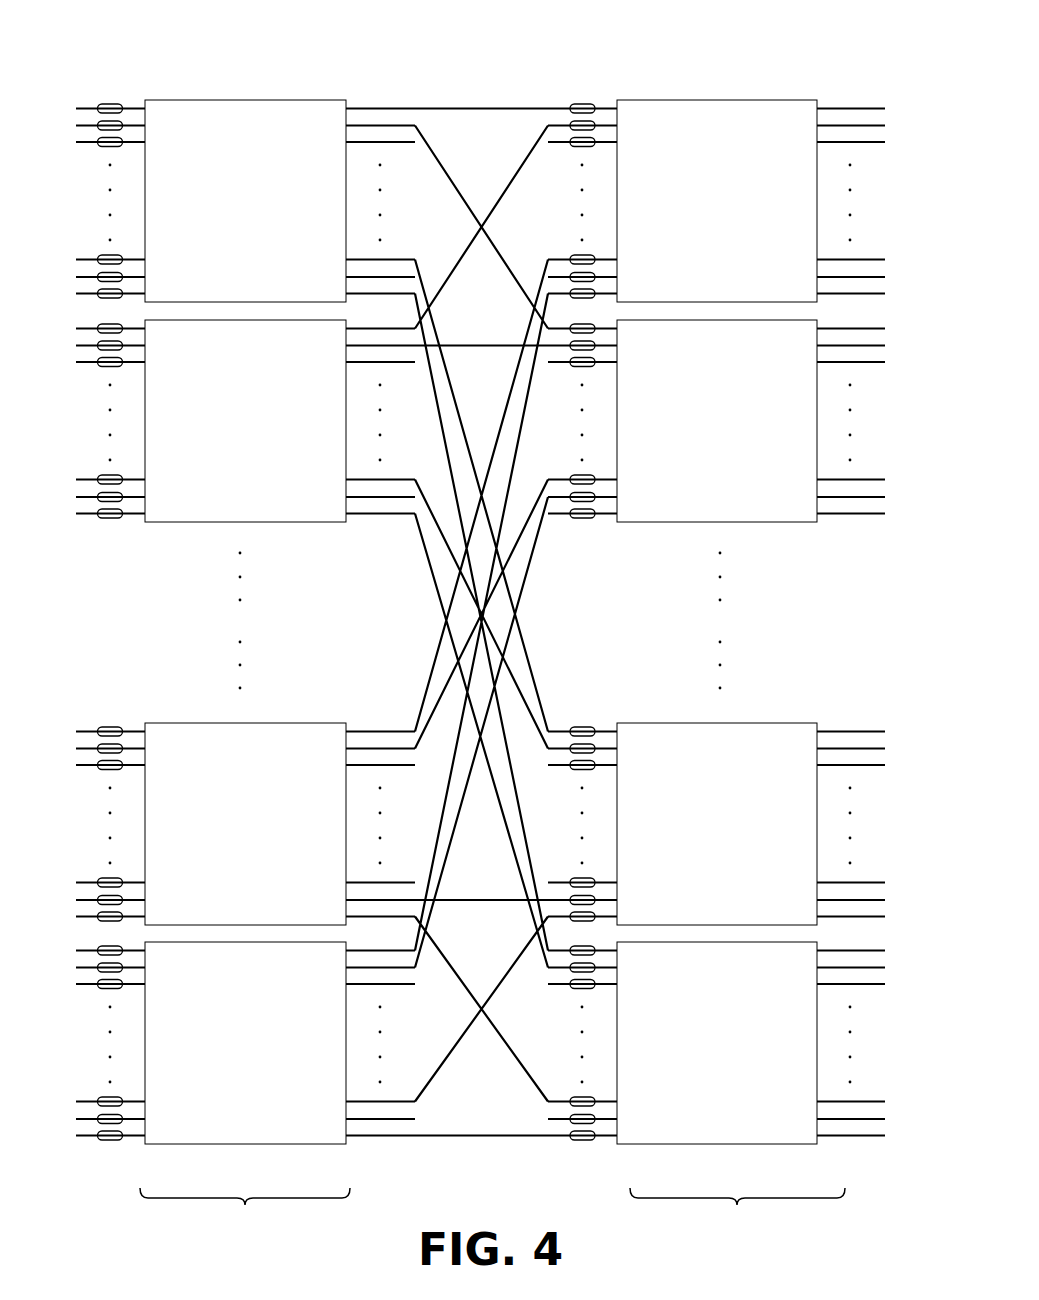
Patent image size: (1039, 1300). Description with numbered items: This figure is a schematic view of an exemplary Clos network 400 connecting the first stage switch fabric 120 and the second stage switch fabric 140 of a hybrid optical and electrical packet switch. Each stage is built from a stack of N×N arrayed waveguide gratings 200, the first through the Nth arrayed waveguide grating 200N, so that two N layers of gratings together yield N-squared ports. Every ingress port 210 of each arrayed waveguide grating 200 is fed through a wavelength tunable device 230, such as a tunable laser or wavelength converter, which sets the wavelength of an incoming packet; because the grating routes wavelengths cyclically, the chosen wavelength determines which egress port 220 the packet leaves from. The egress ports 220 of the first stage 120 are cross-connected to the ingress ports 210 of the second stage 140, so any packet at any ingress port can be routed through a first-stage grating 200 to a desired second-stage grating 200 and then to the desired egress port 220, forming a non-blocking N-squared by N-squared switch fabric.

The Clos network 400 is at (756, 41).
The N×N arrayed waveguide grating 200 is at (245, 100).
The Nth N×N arrayed waveguide grating 200N is at (284, 1144).
The ingress port 210 is at (130, 92).
The egress port 220 is at (382, 99).
The wavelength tunable device 230 is at (112, 100).
The first stage switch fabric 120 is at (245, 1212).
The second stage switch fabric 140 is at (737, 1212).